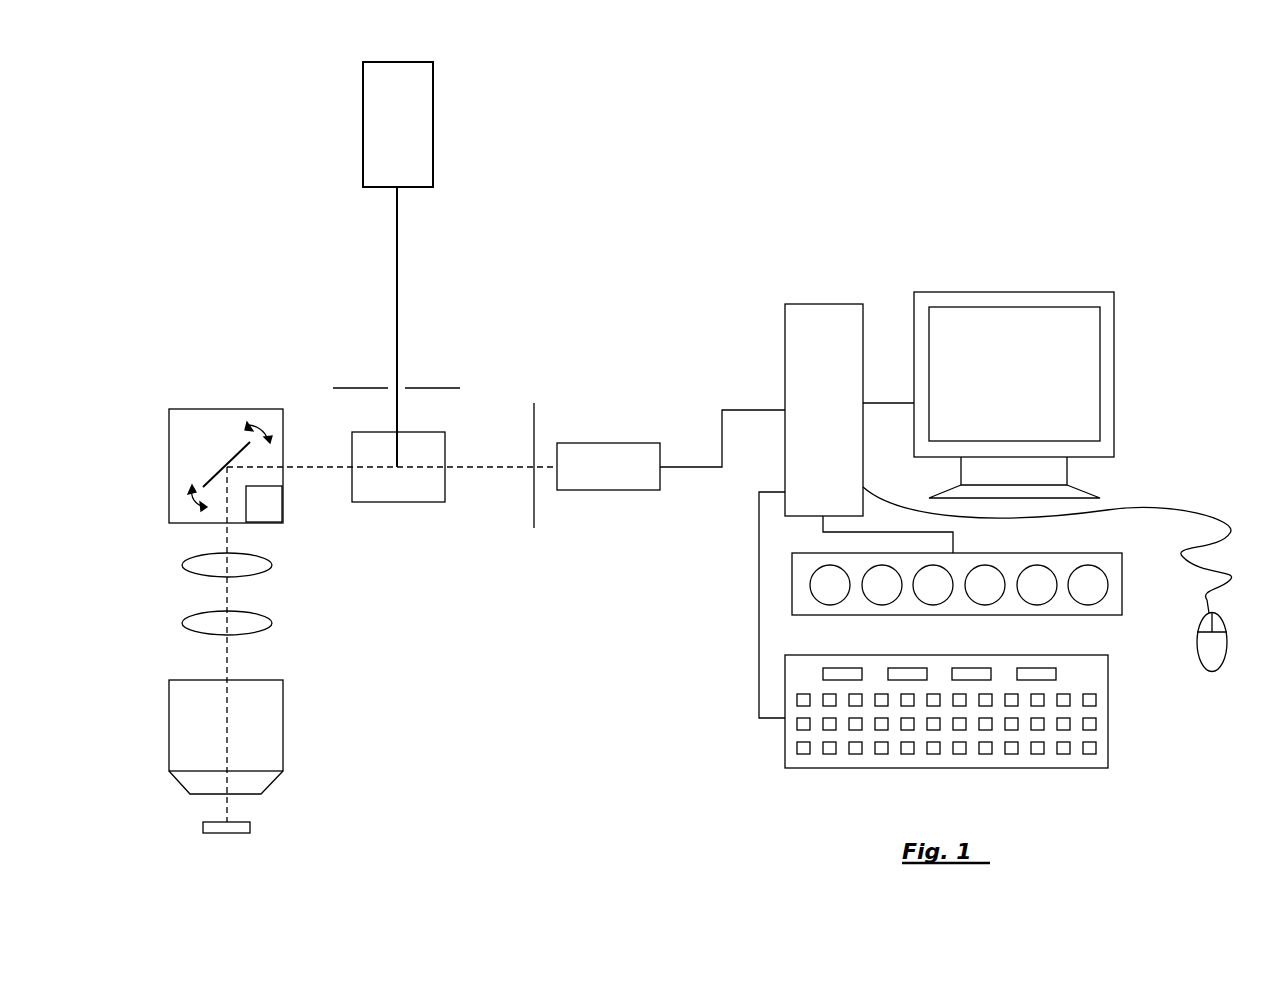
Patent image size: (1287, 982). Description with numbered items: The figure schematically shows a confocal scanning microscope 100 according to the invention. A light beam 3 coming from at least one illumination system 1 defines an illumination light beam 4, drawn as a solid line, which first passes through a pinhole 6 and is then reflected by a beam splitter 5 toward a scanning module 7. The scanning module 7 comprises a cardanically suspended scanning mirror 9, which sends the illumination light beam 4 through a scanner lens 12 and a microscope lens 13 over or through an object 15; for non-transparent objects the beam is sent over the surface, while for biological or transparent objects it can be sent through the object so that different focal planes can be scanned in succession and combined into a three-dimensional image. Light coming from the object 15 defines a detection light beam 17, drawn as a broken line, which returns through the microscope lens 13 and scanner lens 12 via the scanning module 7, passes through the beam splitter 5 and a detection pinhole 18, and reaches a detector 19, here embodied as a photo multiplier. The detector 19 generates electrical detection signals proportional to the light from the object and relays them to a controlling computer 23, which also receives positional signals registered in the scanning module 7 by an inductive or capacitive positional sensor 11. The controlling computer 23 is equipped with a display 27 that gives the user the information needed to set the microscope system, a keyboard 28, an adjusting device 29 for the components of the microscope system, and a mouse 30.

The illumination system 1 is at (420, 103).
The light beam 3 is at (397, 223).
The illumination light beam 4 is at (397, 357).
The beam splitter 5 is at (420, 495).
The pinhole 6 is at (350, 389).
The scanning module 7 is at (193, 430).
The scanning mirror 9 is at (213, 472).
The positional sensor 11 is at (268, 509).
The scanner lens 12 is at (200, 562).
The microscope lens 13 is at (190, 708).
The object 15 is at (215, 826).
The detection light beam 17 is at (458, 467).
The detection pinhole 18 is at (537, 427).
The detector 19 is at (578, 456).
The controlling computer 23 is at (805, 328).
The display 27 is at (982, 328).
The keyboard 28 is at (1085, 675).
The adjusting device 29 is at (1015, 562).
The mouse 30 is at (1203, 648).
The confocal scanning microscope 100 is at (338, 556).